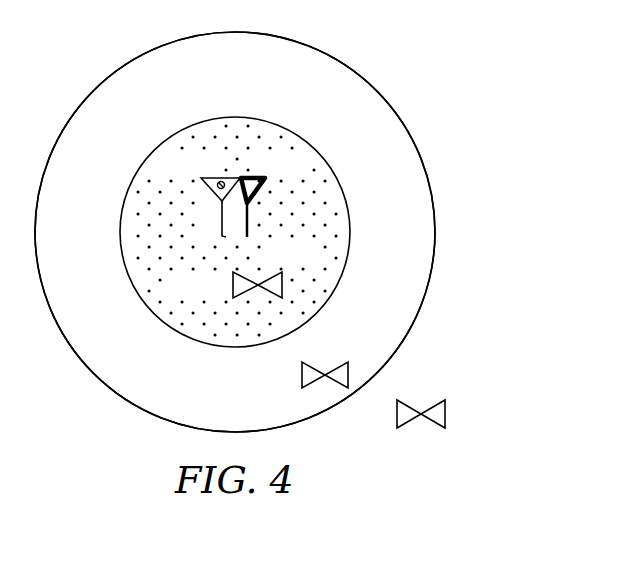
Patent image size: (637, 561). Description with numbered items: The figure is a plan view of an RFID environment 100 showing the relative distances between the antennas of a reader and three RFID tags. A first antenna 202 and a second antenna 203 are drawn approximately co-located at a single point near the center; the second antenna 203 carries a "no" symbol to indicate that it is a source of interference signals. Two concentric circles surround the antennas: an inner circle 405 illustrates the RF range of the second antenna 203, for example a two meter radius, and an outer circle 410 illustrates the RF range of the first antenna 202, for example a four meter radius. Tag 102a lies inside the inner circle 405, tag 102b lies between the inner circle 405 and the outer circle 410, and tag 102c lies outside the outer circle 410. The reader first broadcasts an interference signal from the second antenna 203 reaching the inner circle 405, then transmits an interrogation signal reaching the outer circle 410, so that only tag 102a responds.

The environment 100 is at (522, 50).
The outer circle 410 is at (330, 53).
The inner circle 405 is at (263, 117).
The first antenna 202 is at (252, 178).
The second antenna 203 is at (216, 178).
The tag 102a is at (233, 284).
The tag 102b is at (302, 374).
The tag 102c is at (445, 412).